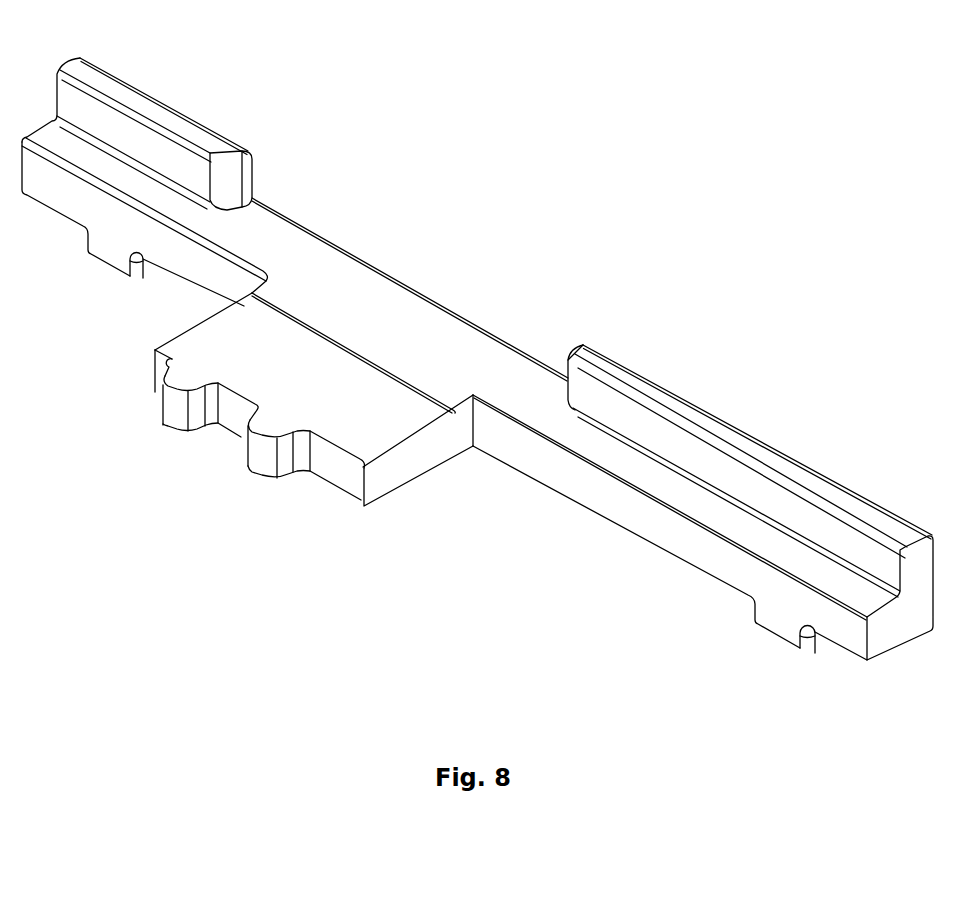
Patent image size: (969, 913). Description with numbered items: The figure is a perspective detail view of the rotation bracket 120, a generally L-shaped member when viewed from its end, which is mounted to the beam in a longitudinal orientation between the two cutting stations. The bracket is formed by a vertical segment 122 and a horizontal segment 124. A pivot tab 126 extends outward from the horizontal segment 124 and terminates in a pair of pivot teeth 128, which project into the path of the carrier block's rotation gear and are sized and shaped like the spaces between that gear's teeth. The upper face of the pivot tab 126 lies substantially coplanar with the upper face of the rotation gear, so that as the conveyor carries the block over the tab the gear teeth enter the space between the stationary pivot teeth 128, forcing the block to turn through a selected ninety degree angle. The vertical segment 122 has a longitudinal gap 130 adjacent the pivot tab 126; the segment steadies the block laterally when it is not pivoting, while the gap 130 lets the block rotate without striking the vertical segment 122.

The rotation bracket 120 is at (477, 335).
The vertical segment 122 is at (160, 108).
The horizontal segment 124 is at (363, 322).
The pivot tab 126 is at (299, 431).
The pivot teeth 128 is at (260, 458).
The longitudinal gap 130 is at (435, 290).